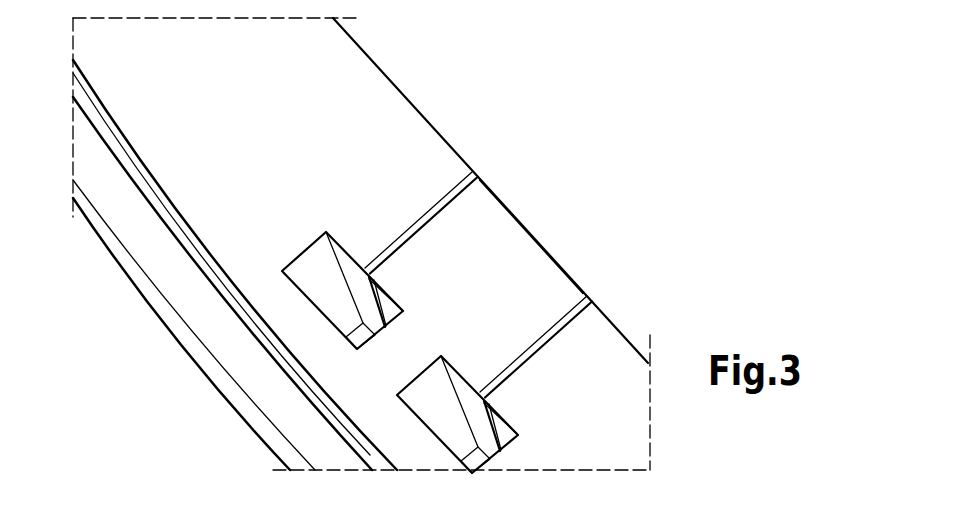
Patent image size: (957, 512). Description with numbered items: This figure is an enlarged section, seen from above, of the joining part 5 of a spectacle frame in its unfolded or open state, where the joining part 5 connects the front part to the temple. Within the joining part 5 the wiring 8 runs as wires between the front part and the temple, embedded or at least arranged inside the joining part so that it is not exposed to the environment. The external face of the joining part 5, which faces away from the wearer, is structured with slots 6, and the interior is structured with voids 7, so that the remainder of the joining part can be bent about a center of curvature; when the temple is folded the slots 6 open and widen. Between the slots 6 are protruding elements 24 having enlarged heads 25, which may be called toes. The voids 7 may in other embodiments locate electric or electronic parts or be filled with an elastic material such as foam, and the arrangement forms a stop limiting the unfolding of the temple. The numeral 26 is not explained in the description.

The joining part 5 is at (569, 220).
The slots 6 is at (482, 168).
The voids 7 is at (316, 287).
The wiring 8 is at (165, 218).
The protruding elements 24 is at (574, 267).
The enlarged heads 25 is at (492, 218).
The second mounting block 26 is at (393, 357).